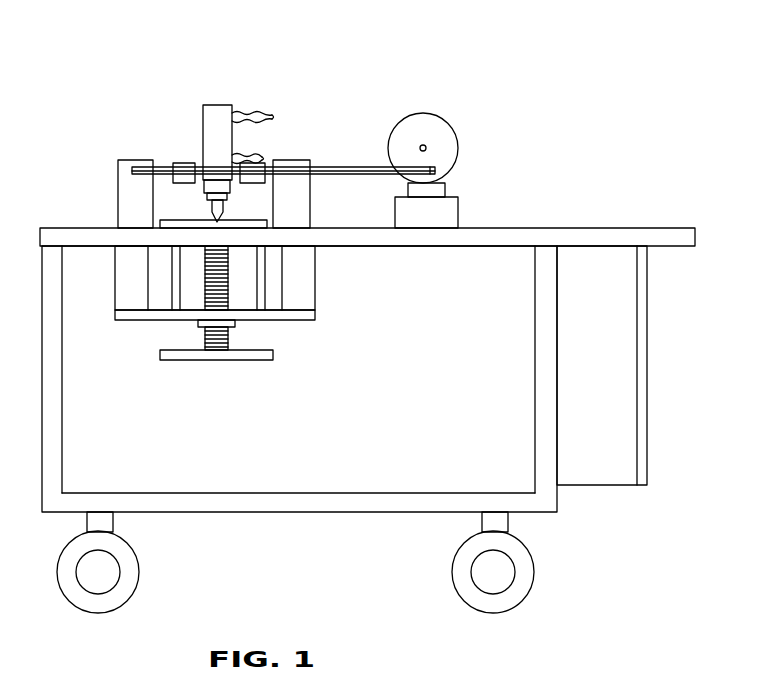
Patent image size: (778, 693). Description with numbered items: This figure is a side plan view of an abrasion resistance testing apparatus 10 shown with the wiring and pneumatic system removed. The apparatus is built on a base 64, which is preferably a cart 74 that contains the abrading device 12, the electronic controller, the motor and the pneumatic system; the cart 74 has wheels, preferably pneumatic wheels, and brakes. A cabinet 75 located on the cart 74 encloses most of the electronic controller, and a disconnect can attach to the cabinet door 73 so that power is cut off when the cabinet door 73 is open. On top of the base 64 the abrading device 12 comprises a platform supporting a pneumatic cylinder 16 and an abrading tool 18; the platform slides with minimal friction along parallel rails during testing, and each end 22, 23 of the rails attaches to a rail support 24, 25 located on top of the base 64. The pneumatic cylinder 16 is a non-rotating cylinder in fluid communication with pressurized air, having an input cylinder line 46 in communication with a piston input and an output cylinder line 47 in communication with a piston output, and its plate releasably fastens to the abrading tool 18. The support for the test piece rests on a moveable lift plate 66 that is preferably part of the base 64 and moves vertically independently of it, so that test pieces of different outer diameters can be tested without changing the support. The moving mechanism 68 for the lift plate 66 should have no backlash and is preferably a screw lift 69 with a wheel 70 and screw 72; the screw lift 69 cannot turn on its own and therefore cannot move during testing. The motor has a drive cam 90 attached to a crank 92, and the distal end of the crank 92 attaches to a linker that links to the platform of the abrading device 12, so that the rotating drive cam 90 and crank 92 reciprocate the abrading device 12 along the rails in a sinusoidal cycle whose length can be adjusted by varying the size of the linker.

The abrasion resistance testing apparatus 10 is at (442, 78).
The abrading device 12 is at (220, 120).
The pneumatic cylinder 16 is at (218, 108).
The abrading tool 18 is at (213, 213).
The end of the rails 22 is at (132, 163).
The end of the rails 23 is at (305, 163).
The rail support 24 is at (127, 202).
The rail support 25 is at (300, 197).
The input cylinder line 46 is at (262, 118).
The output cylinder line 47 is at (265, 157).
The base 64 is at (288, 502).
The lift plate 66 is at (157, 225).
The moving mechanism 68 is at (208, 282).
The screw lift 69 is at (225, 340).
The wheel 70 is at (227, 360).
The screw 72 is at (212, 281).
The cabinet door 73 is at (640, 332).
The cart 74 is at (600, 227).
The cabinet 75 is at (588, 369).
The drive cam 90 is at (447, 132).
The crank 92 is at (357, 167).